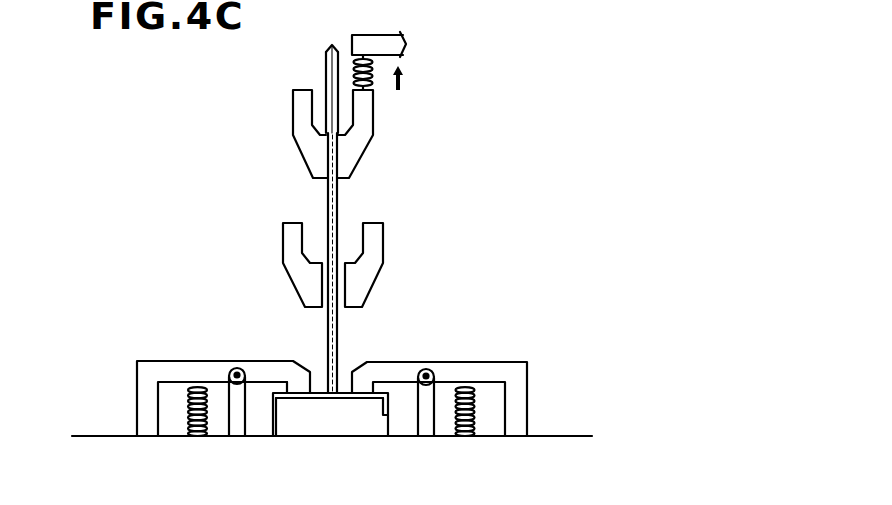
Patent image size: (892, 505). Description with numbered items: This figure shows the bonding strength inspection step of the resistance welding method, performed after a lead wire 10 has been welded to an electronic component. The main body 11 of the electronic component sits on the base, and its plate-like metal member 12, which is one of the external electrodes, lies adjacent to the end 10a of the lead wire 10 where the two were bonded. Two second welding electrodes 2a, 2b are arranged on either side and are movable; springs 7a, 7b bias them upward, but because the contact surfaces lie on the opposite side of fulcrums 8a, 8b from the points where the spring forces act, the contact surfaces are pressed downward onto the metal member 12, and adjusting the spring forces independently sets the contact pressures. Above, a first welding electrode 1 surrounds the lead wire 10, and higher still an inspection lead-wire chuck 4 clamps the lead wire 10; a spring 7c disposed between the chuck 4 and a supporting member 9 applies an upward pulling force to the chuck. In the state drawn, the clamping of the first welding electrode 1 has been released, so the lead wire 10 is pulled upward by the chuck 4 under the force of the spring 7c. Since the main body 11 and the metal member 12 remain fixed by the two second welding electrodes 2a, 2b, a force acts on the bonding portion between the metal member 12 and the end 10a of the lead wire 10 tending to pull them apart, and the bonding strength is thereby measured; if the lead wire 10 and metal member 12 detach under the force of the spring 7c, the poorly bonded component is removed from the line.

The first welding electrode 1 is at (372, 263).
The second welding electrode 2a is at (152, 377).
The second welding electrode 2b is at (516, 377).
The inspection lead-wire chuck 4 is at (304, 129).
The spring 7a is at (188, 412).
The spring 7b is at (475, 412).
The spring 7c is at (374, 87).
The fulcrum 8a is at (237, 368).
The fulcrum 8b is at (427, 369).
The supporting member 9 is at (406, 44).
The lead wire 10 is at (338, 212).
The end of the lead wire 10a is at (336, 398).
The main body of the electronic component 11 is at (377, 422).
The metal member 12 is at (283, 393).